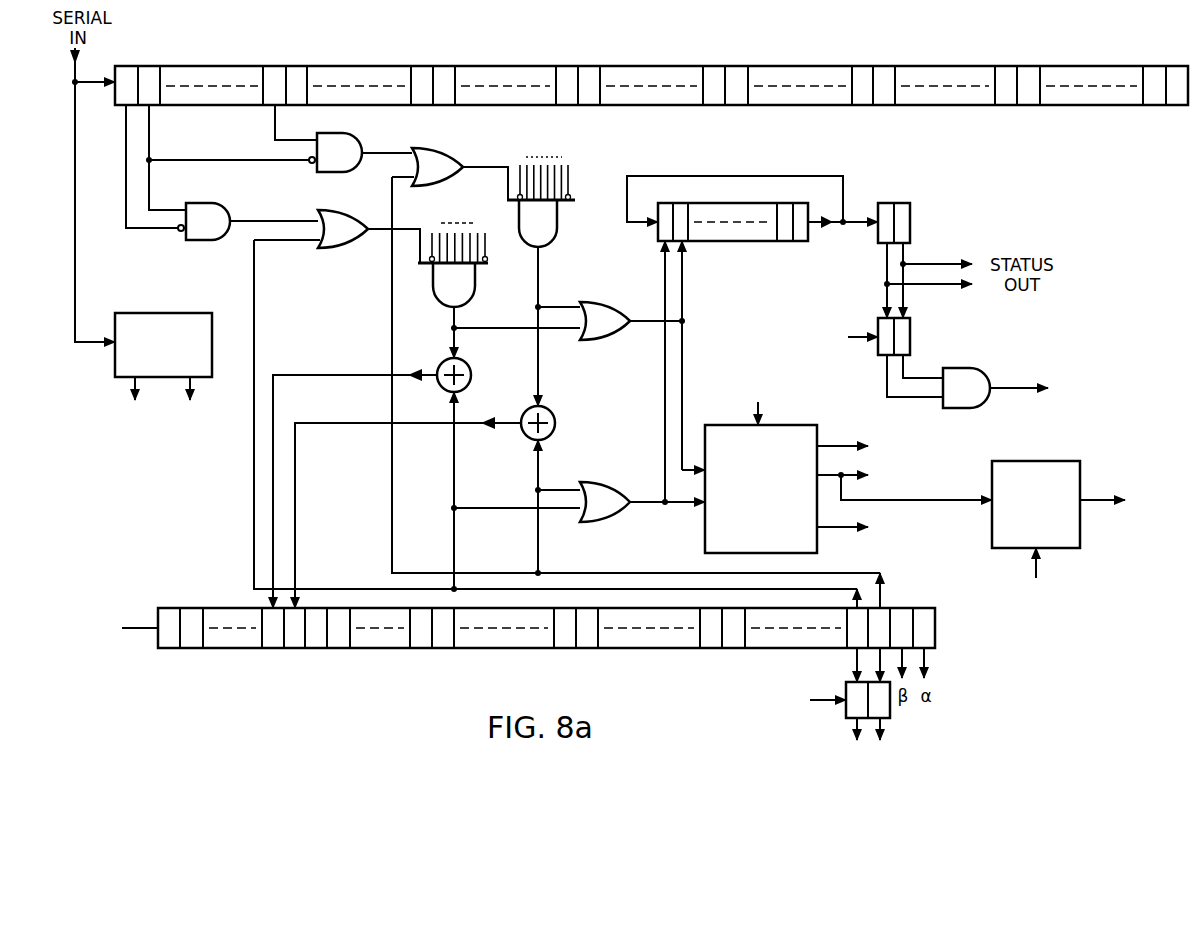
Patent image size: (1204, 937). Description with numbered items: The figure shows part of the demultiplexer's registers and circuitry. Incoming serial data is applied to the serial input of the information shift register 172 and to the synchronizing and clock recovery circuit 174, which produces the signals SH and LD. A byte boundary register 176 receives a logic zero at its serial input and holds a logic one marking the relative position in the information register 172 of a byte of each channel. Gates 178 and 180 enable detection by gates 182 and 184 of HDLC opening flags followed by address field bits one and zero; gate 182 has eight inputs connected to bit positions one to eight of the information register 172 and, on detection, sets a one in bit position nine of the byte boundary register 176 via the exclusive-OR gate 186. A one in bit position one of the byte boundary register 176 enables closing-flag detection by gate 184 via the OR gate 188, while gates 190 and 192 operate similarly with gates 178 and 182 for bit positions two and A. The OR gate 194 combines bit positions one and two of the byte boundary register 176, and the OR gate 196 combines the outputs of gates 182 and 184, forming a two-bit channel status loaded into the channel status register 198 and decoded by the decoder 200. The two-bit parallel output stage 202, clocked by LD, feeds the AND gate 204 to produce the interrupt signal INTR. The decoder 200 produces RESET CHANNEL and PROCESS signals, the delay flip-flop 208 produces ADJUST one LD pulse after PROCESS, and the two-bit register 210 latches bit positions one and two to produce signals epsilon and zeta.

The information shift register 172 is at (938, 66).
The synchronizing and clock recovery circuit 174 is at (156, 313).
The byte boundary register 176 is at (226, 648).
The gate 178 is at (362, 136).
The gate 180 is at (214, 240).
The gate 182 is at (558, 222).
The gate 184 is at (476, 304).
The exclusive-OR gate 186 is at (555, 423).
The OR gate 188 is at (445, 149).
The gate 190 is at (470, 370).
The gate 192 is at (350, 248).
The OR gate 194 is at (623, 482).
The OR gate 196 is at (623, 302).
The channel status register 198 is at (733, 203).
The decoder 200 is at (705, 541).
The two-bit parallel output stage 202 is at (910, 334).
The AND gate 204 is at (984, 370).
The delay flip-flop 208 is at (1080, 538).
The two-bit register 210 is at (890, 718).